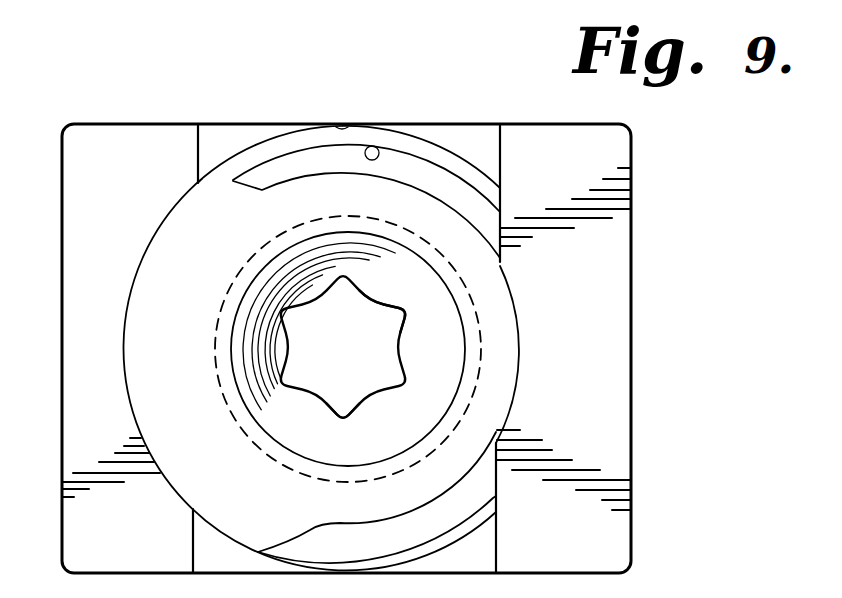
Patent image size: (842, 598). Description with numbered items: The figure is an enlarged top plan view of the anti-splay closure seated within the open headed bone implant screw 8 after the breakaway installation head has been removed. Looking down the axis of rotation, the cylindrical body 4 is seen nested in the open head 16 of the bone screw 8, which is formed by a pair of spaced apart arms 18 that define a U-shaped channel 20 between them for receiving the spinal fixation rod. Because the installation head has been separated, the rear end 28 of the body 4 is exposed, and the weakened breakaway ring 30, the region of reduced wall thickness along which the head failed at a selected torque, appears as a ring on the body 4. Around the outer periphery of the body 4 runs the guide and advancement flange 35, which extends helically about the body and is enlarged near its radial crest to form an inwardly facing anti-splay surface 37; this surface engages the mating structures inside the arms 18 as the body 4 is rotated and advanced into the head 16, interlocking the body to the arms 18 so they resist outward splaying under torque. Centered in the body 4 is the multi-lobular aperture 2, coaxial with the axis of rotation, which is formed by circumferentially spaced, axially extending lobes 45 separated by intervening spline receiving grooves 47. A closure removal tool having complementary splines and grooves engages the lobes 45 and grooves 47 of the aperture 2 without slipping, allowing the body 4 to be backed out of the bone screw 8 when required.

The open headed bone implant screw 8 is at (623, 533).
The arms 18 is at (72, 187).
The open head 16 is at (480, 126).
The U-shaped channel 20 is at (244, 143).
The rear end 28 is at (490, 398).
The body 4 is at (220, 186).
The guide and advancement flange 35 is at (345, 138).
The inward anti-splay surface 37 is at (376, 147).
The breakaway ring 30 is at (483, 301).
The multi-lobular aperture 2 is at (297, 346).
The lobes 45 is at (369, 312).
The spline receiving grooves 47 is at (344, 418).